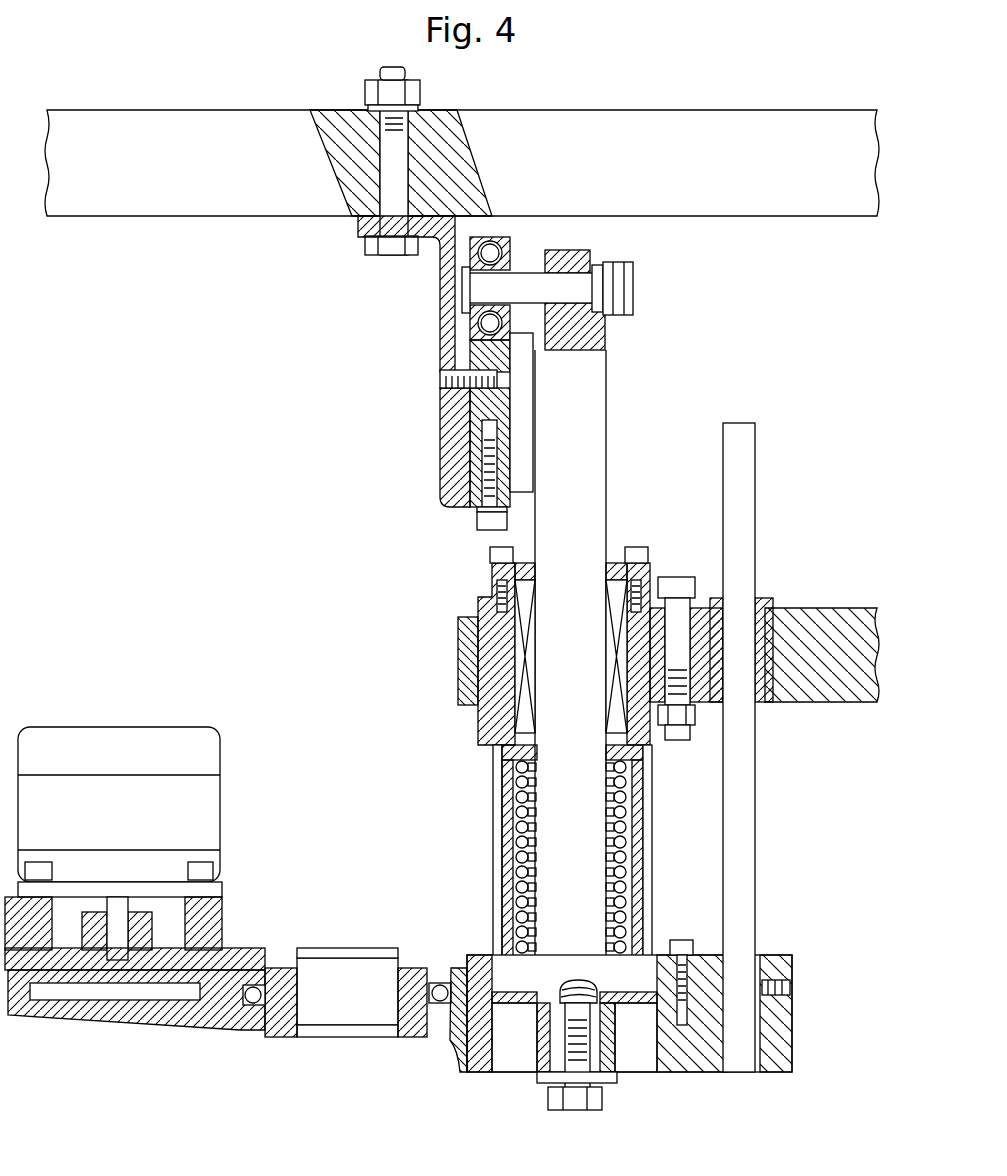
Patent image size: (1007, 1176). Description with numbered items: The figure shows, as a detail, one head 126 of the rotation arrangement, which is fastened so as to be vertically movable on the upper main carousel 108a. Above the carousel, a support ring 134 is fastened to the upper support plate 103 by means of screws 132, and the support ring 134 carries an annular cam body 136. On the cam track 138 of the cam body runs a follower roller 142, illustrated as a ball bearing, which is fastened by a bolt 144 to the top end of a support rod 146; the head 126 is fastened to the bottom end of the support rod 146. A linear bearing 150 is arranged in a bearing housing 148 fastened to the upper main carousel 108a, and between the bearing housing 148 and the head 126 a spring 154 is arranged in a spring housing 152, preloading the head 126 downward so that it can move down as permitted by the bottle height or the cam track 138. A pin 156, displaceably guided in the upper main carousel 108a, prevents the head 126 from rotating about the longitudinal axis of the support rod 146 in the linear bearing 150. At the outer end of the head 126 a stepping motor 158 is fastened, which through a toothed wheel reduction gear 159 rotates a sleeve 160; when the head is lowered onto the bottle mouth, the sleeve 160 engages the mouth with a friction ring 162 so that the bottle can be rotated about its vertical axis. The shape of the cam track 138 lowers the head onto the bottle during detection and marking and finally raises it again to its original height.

The upper support plate 103 is at (558, 124).
The screws 132 is at (396, 148).
The support ring 134 is at (455, 454).
The annular cam body 136 is at (478, 407).
The cam track 138 is at (472, 334).
The follower roller 142 is at (470, 248).
The bolt 144 is at (478, 294).
The support rod 146 is at (595, 493).
The bearing housing 148 is at (497, 729).
The linear bearing 150 is at (518, 660).
The spring housing 152 is at (507, 800).
The spring 154 is at (510, 868).
The pin 156 is at (740, 493).
The upper main carousel 108a is at (805, 697).
The stepping motor 158 is at (205, 802).
The toothed wheel reduction gear 159 is at (242, 950).
The sleeve 160 is at (280, 1036).
The friction ring 162 is at (412, 1040).
The head 126 is at (793, 1045).